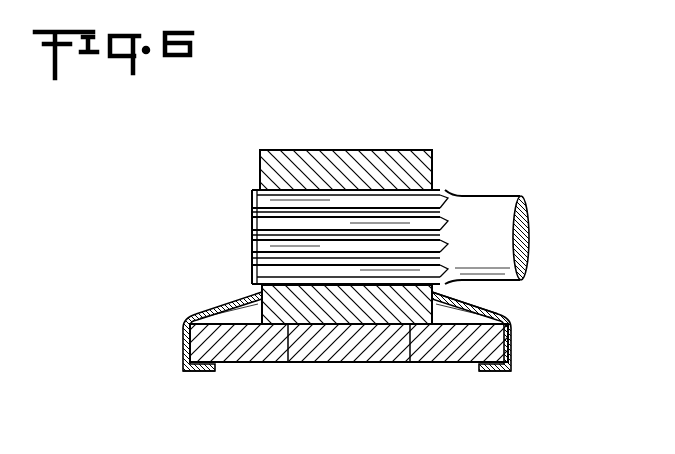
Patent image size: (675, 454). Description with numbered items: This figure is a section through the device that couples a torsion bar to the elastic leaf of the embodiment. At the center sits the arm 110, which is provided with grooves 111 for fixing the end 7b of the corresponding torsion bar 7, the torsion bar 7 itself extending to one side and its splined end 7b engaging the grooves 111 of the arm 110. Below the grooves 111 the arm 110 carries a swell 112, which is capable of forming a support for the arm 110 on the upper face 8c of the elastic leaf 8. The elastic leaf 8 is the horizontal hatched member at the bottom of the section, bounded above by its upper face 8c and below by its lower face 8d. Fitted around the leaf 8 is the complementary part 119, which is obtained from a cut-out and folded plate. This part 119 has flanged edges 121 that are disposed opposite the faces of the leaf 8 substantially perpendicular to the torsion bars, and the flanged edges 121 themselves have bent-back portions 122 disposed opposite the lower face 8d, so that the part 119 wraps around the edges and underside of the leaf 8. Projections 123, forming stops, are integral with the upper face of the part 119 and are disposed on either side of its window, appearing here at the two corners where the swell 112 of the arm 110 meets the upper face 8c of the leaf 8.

The arm 110 is at (288, 166).
The grooves 111 is at (377, 190).
The torsion bar 7 is at (487, 201).
The end of the torsion bar 7b is at (250, 221).
The upper face of the leaf 8c is at (226, 317).
The elastic leaf 8 is at (374, 349).
The lower face of the elastic leaf 8d is at (395, 364).
The swell 112 is at (323, 330).
The complementary part 119 is at (464, 298).
The flanged edges 121 is at (183, 341).
The bent-back portions 122 is at (193, 373).
The projections 123 is at (266, 298).